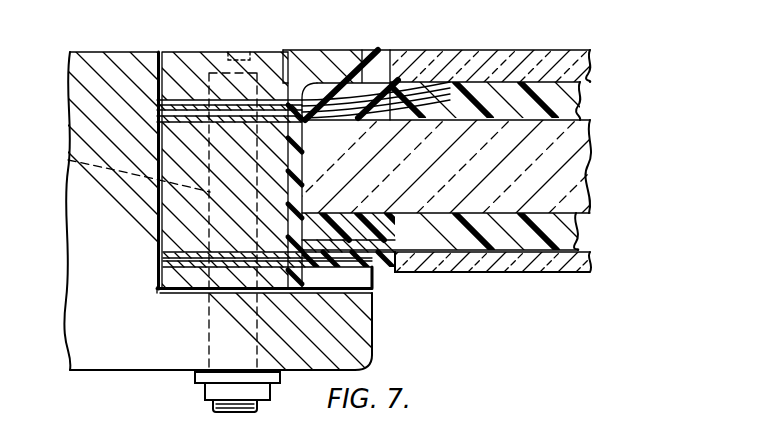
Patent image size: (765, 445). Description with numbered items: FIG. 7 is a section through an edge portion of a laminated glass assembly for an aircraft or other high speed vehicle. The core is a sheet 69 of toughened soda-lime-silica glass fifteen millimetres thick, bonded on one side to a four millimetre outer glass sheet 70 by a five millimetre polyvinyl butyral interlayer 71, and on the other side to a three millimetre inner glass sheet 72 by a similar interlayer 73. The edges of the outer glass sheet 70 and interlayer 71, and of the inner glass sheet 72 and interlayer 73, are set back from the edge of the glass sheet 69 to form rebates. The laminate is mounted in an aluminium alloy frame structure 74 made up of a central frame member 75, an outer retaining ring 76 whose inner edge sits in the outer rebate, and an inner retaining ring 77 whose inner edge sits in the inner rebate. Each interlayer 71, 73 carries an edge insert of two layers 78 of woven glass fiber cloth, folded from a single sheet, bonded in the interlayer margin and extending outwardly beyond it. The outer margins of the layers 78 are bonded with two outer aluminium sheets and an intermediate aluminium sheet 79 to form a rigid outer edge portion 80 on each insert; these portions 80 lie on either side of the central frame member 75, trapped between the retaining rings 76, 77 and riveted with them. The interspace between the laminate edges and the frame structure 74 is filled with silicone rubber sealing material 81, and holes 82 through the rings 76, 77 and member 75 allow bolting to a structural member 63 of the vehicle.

The housing body 63 is at (83, 342).
The sheet of toughened soda-lime-silica glass 69 is at (572, 143).
The outer glass sheet 70 is at (592, 58).
The interlayer 71 is at (575, 90).
The inner glass sheet 72 is at (580, 262).
The interlayer 73 is at (578, 224).
The frame structure 74 is at (306, 62).
The central frame member 75 is at (170, 212).
The outer retaining ring 76 is at (201, 67).
The inner retaining ring 77 is at (352, 275).
The layers of woven glass fiber cloth 78 is at (442, 97).
The intermediate aluminium sheet 79 is at (157, 122).
The rigid outer edge portion 80 is at (271, 96).
The silicone rubber sealing material 81 is at (292, 157).
The holes 82 is at (68, 160).